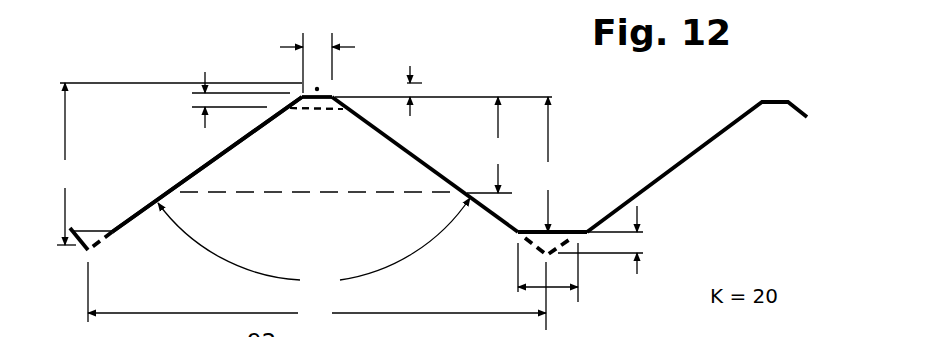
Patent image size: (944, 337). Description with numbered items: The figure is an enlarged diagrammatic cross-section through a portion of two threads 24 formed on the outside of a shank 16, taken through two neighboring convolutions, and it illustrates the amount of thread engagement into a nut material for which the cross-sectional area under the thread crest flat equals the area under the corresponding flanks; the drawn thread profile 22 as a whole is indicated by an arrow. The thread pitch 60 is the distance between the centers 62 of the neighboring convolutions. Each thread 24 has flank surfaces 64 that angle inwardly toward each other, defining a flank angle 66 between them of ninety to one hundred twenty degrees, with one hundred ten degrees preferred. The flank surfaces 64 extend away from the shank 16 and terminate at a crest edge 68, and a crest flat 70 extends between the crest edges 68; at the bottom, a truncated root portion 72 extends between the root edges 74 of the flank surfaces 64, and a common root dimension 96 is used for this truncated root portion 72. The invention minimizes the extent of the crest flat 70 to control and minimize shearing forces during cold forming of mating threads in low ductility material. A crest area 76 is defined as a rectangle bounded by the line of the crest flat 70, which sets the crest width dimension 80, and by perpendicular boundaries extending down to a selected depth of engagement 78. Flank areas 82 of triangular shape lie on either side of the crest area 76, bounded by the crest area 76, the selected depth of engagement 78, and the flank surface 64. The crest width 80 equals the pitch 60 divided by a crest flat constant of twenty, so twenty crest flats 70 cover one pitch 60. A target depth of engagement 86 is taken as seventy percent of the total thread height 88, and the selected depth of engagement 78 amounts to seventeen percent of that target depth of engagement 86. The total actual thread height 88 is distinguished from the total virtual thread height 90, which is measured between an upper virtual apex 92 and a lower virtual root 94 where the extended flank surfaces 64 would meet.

The shank 16 is at (143, 245).
The corrugated profile 22 is at (617, 125).
The thread 24 is at (196, 172).
The thread pitch 60 is at (317, 318).
The center 62 is at (88, 293).
The flank surface 64 is at (143, 213).
The flank angle 66 is at (314, 249).
The crest edge 68 is at (298, 90).
The crest flat 70 is at (318, 91).
The truncated root portion 72 is at (575, 230).
The root edge 74 is at (588, 222).
The crest area 76 is at (315, 108).
The selected depth of engagement 78 is at (192, 96).
The crest width dimension 80 is at (320, 47).
The flank area 82 is at (296, 112).
The target depth of engagement 86 is at (504, 145).
The total thread height 88 is at (551, 164).
The total virtual thread height 90 is at (69, 164).
The upper virtual apex 92 is at (312, 86).
The lower virtual root 94 is at (83, 250).
The common root dimension 96 is at (560, 288).